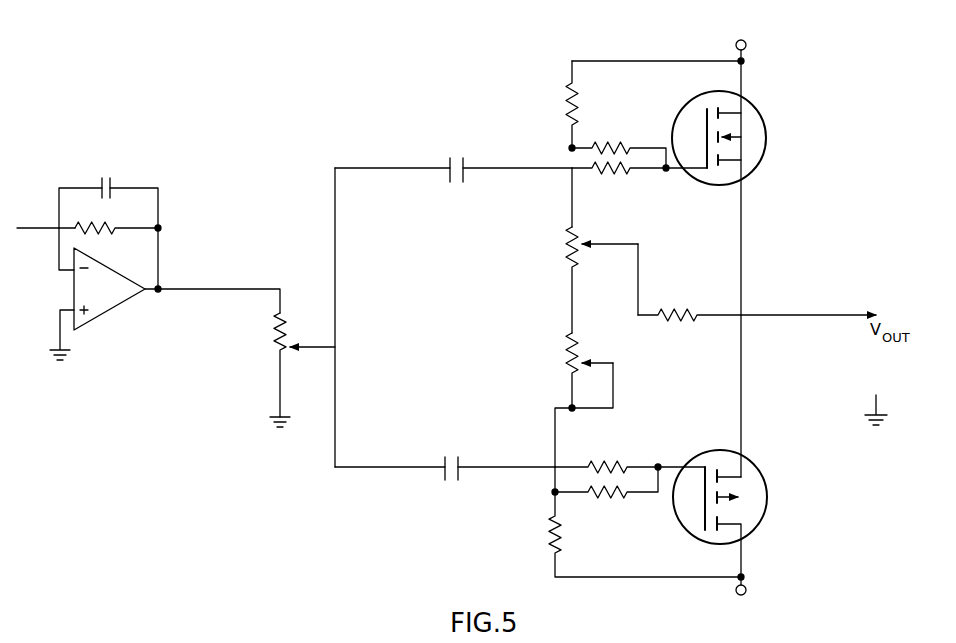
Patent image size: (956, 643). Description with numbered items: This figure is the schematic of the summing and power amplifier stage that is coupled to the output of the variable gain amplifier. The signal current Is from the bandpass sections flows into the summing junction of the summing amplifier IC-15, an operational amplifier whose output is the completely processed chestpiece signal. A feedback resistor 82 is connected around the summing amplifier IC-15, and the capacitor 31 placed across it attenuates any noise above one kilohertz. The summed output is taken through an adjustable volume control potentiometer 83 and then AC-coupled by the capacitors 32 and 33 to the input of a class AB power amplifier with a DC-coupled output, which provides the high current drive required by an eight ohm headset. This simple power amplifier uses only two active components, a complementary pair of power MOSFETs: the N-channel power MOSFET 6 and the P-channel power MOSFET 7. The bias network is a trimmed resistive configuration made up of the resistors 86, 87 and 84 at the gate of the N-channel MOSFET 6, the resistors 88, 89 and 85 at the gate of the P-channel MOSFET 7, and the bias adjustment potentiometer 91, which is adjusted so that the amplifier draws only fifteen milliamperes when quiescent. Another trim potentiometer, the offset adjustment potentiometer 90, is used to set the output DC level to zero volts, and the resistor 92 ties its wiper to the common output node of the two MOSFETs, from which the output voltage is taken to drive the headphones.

The signal current S is at (36, 228).
The resistor 82 is at (110, 247).
The capacitor 31 is at (108, 192).
The summing amplifier 15 is at (105, 294).
The adjustable volume control potentiometer R83 83 is at (238, 358).
The capacitor 32 is at (453, 180).
The capacitor 33 is at (445, 479).
The resistor 86 is at (550, 104).
The resistor 87 is at (617, 141).
The resistor 84 is at (639, 182).
The N-channel power MOSFET 6 is at (726, 123).
The trim potentiometer 90 is at (529, 276).
The resistor 92 is at (689, 301).
The potentiometer 91 is at (517, 400).
The resistor 85 is at (630, 456).
The resistor 89 is at (605, 498).
The resistor 88 is at (625, 522).
The P-channel power MOSFET 7 is at (727, 522).